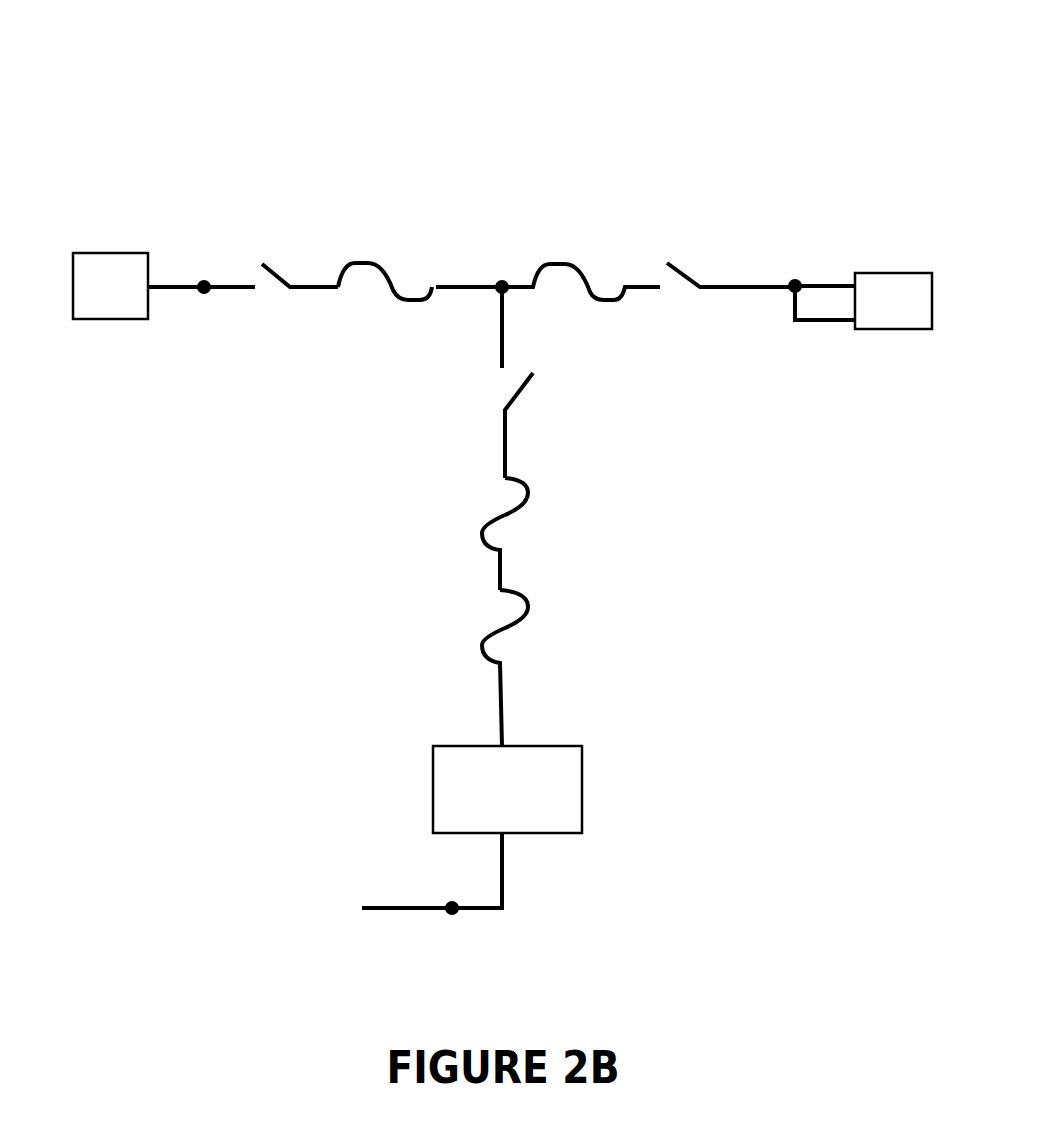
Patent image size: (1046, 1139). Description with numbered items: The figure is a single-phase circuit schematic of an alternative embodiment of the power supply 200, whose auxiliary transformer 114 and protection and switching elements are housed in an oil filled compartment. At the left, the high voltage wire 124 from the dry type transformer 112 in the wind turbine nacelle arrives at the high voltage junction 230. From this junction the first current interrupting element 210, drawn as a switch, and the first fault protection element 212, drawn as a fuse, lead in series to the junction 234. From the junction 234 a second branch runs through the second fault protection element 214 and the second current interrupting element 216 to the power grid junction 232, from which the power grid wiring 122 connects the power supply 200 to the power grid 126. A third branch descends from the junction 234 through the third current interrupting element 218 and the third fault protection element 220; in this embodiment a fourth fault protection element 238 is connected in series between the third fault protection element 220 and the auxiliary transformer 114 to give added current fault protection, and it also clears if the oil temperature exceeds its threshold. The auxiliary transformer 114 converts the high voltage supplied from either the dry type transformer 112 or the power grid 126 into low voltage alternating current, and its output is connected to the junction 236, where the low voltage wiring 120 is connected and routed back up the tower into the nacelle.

The power supply 200 is at (527, 115).
The dry type transformer 112 is at (110, 286).
The high voltage wire 124 is at (177, 293).
The high voltage junction 230 is at (202, 303).
The first current interrupting element 210 is at (255, 257).
The first fault protection element 212 is at (358, 243).
The junction 234 is at (499, 273).
The second fault protection element 214 is at (570, 250).
The second current interrupting element 216 is at (682, 247).
The power grid junction 232 is at (797, 274).
The power grid wiring 122 is at (832, 291).
The power grid 126 is at (893, 301).
The third current interrupting element 218 is at (535, 403).
The third fault protection element 220 is at (540, 484).
The fourth fault protection element 238 is at (535, 643).
The auxiliary transformer 114 is at (507, 789).
The low voltage wiring 120 is at (378, 918).
The junction 236 is at (457, 917).